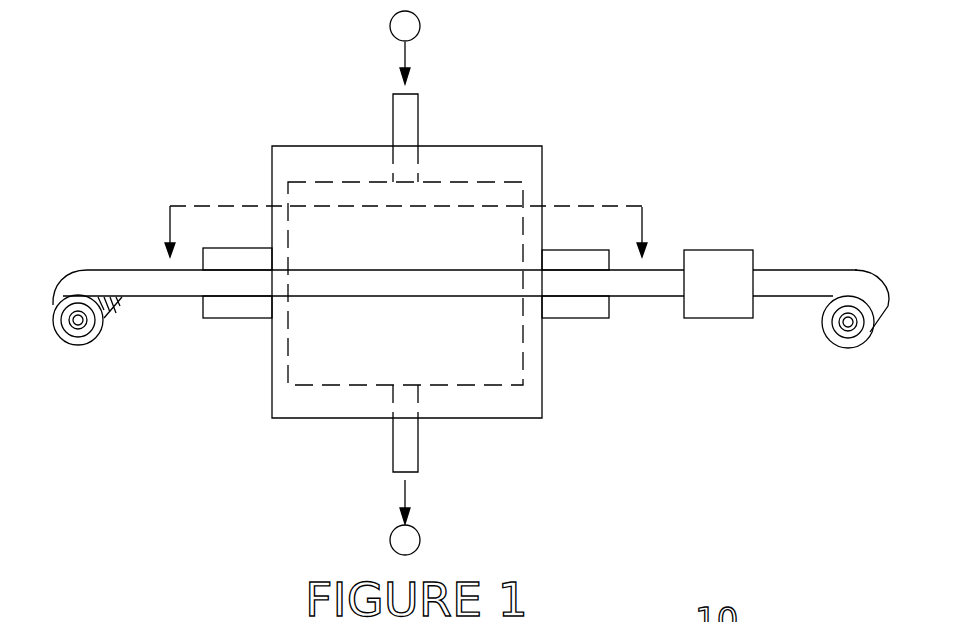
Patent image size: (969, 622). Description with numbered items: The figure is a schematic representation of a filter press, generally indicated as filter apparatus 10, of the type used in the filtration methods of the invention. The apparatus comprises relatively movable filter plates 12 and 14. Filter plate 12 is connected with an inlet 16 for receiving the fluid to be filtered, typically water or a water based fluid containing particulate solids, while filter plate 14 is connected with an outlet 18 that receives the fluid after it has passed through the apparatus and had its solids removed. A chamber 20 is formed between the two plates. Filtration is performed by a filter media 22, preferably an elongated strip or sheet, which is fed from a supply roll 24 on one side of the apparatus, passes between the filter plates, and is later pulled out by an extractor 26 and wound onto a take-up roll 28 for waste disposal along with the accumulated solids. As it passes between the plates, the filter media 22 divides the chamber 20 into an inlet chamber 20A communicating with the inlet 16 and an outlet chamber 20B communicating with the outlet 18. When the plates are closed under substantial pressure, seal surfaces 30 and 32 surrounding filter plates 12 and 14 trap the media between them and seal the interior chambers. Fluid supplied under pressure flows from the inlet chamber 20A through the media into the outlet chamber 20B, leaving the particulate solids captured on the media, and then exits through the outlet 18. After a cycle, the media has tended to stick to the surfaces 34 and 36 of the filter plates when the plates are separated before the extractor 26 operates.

The filter apparatus 10 is at (658, 131).
The filter plate 12 is at (276, 178).
The filter plate 14 is at (272, 403).
The inlet 16 is at (420, 25).
The outlet 18 is at (420, 542).
The chamber 20 is at (505, 196).
The inlet chamber 20A is at (405, 253).
The outlet chamber 20B is at (406, 336).
The filter media 22 is at (471, 299).
The supply roll 24 is at (66, 342).
The extractor 26 is at (722, 263).
The take-up roll 28 is at (855, 345).
The seal surface 30 is at (218, 250).
The seal surface 32 is at (205, 310).
The surface of filter plate 34 is at (238, 272).
The surface of filter plate 36 is at (280, 297).